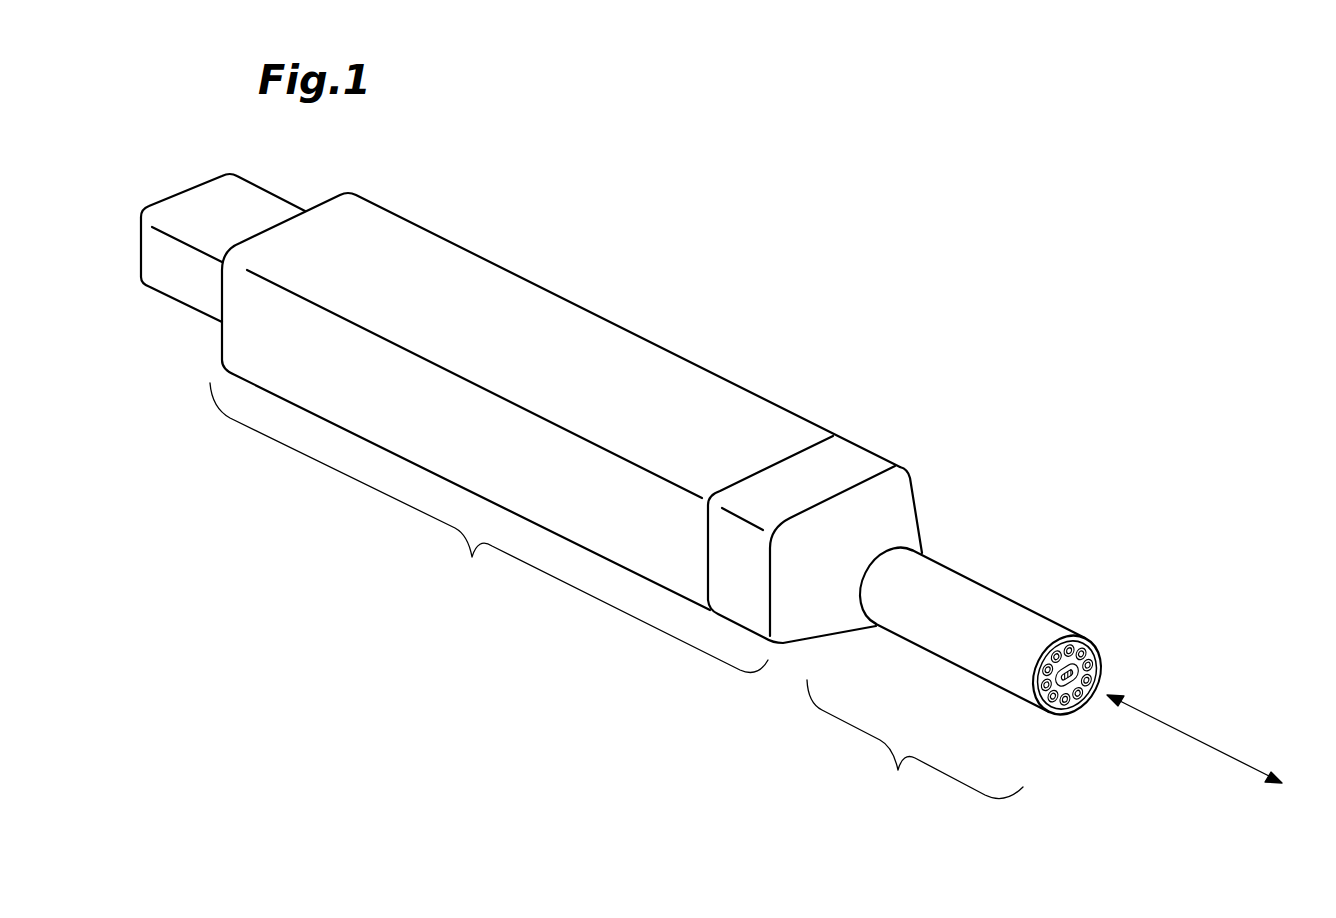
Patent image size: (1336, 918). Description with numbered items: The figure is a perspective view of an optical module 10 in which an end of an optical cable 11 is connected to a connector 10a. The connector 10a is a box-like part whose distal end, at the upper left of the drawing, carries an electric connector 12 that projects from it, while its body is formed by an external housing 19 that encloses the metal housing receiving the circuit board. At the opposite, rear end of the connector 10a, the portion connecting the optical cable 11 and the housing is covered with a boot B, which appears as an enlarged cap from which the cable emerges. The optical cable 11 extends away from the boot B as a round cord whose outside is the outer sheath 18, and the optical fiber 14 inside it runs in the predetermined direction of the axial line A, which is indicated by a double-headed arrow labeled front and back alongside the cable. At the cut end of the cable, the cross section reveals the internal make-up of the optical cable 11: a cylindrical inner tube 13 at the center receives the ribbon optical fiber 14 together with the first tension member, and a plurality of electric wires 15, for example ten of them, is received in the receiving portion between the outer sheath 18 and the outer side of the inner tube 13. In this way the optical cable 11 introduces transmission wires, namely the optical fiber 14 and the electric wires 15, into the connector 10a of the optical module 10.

The optical module 10 is at (773, 138).
The connector 10a is at (489, 527).
The optical cable 11 is at (915, 743).
The electric connector 12 is at (212, 200).
The inner tube 13 is at (1073, 717).
The optical fiber 14 is at (1092, 670).
The electric wire 15 is at (1100, 650).
The outer sheath 18 is at (975, 605).
The external housing 19 is at (572, 327).
The axial line A is at (1203, 740).
The boot B is at (895, 498).